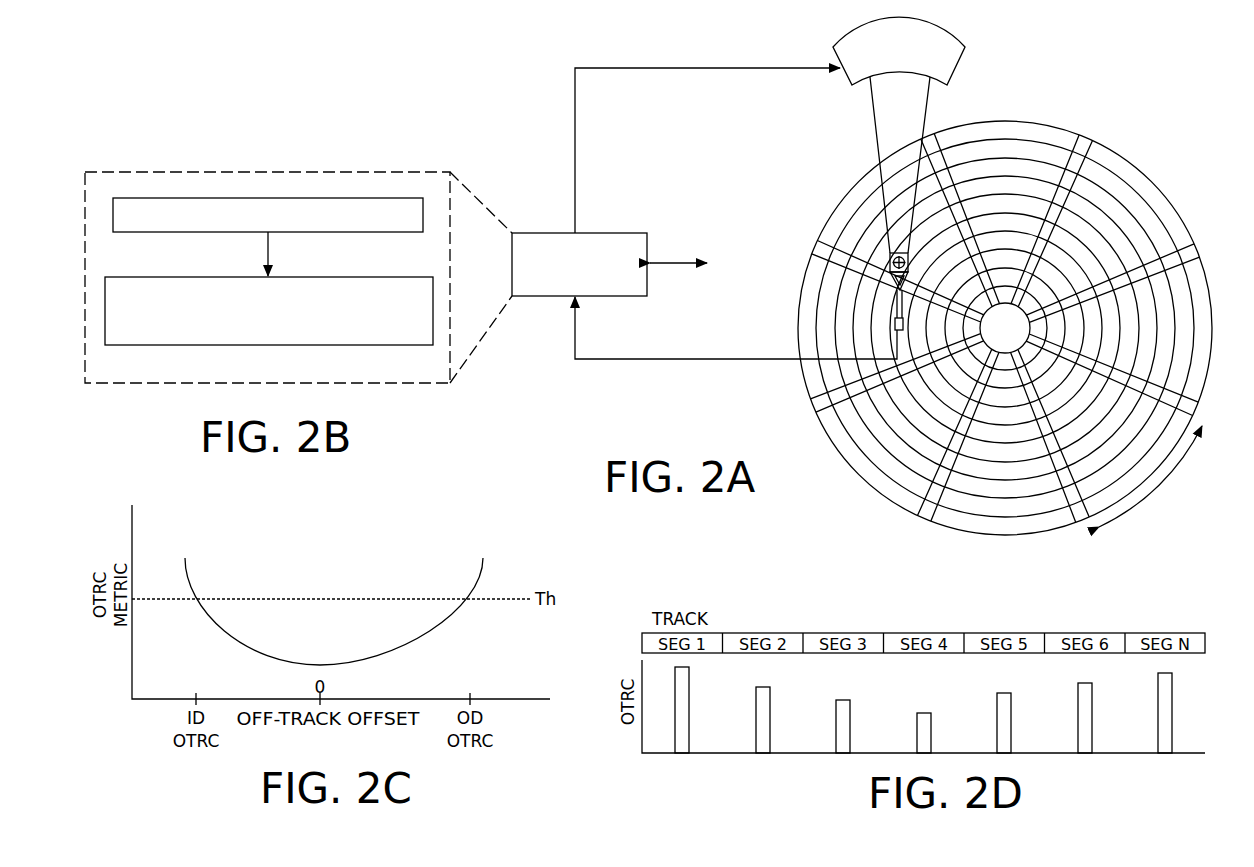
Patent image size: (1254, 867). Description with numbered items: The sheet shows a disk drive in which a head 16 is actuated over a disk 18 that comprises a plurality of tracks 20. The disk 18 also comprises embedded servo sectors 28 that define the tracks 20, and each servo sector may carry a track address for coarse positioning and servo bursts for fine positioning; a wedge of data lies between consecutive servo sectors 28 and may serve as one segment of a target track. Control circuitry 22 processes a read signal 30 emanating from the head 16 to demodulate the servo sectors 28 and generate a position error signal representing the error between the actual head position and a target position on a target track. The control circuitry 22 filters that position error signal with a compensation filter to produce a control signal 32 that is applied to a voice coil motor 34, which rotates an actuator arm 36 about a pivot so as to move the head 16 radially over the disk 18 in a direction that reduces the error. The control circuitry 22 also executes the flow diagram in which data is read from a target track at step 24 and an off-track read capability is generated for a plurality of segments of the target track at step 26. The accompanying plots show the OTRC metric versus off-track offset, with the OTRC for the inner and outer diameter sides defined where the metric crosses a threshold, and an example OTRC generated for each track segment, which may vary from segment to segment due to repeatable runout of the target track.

In FIG. 2A, the head 16 is at (893, 332).
In FIG. 2A, the disk 18 is at (1148, 172).
In FIG. 2A, the tracks 20 is at (1004, 150).
In FIG. 2A, the control circuitry 22 is at (615, 233).
In FIG. 2B, the read data from track step 24 is at (392, 232).
In FIG. 2B, the generate OTRC for track segments step 26 is at (400, 345).
In FIG. 2A, the servo sectors 28 is at (1079, 543).
In FIG. 2A, the read signal 30 is at (705, 359).
In FIG. 2A, the control signal 32 is at (575, 140).
In FIG. 2A, the voice coil motor 34 is at (850, 81).
In FIG. 2A, the actuator arm 36 is at (879, 152).